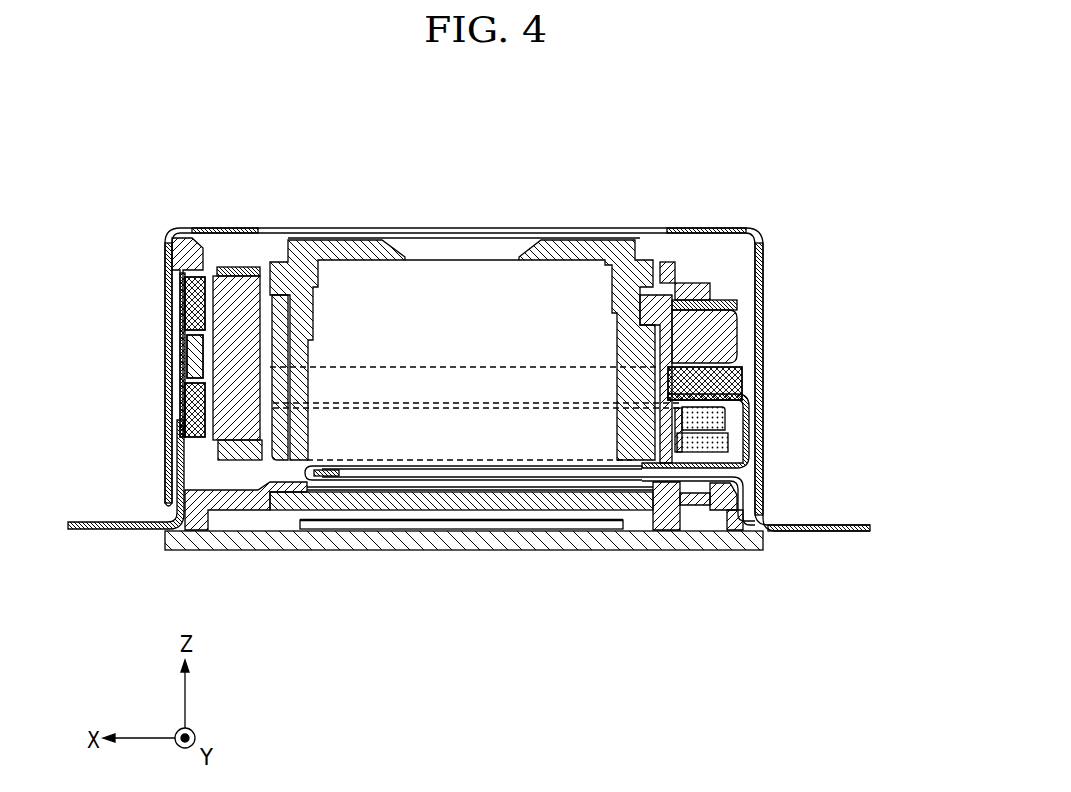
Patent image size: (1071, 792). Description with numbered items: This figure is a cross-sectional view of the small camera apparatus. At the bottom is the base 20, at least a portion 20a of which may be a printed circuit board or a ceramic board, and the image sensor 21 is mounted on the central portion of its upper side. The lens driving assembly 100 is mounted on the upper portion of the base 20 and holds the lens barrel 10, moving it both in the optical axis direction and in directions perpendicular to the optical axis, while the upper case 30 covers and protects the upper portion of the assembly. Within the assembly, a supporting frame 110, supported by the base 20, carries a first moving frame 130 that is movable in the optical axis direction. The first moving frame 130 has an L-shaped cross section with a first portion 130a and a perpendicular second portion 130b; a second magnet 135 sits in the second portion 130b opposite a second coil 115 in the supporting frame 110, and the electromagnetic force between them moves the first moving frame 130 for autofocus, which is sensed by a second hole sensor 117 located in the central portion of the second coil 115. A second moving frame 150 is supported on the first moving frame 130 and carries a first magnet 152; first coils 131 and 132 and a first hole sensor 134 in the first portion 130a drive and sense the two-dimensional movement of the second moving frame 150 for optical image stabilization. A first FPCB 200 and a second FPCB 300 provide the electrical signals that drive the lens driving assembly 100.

The lens barrel 10 is at (583, 254).
The base 20 is at (298, 551).
The portion of the base 20a is at (557, 543).
The image sensor 21 is at (450, 523).
The upper case 30 is at (759, 232).
The lens driving assembly 100 is at (714, 289).
The supporting frame 110 is at (170, 247).
The second coil 115 is at (190, 303).
The second hole sensor 117 is at (190, 357).
The first moving frame 130 is at (242, 264).
The first portion of the first moving frame 130a is at (580, 435).
The second portion of the first moving frame 130b is at (256, 266).
The first coil 131 is at (553, 380).
The first coil 132 is at (735, 390).
The first hole sensor 134 is at (728, 421).
The second magnet 135 is at (217, 228).
The second moving frame 150 is at (686, 262).
The first magnet 152 is at (732, 342).
The first FPCB 200 is at (820, 525).
The second FPCB 300 is at (135, 521).